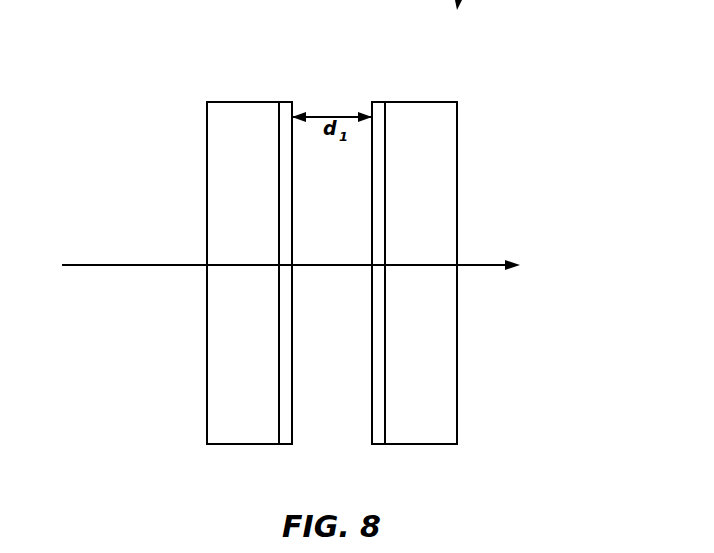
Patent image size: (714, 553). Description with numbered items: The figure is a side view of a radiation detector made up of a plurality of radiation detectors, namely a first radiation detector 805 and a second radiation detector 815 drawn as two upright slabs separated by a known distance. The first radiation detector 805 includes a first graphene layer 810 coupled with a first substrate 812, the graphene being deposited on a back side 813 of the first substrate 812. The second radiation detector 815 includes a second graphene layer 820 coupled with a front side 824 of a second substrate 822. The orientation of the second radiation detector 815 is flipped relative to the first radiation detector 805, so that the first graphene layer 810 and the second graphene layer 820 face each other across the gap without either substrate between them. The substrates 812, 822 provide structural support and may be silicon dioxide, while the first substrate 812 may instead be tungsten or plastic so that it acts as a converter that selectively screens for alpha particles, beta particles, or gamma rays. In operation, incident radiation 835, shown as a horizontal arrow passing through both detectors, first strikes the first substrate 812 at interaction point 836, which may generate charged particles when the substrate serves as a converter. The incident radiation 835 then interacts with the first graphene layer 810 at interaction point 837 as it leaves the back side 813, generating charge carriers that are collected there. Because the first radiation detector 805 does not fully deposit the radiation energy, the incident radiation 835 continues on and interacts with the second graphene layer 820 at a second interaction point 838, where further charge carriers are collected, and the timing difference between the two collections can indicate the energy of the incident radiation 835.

The first radiation detector 805 is at (292, 97).
The second radiation detector 815 is at (457, 97).
The first graphene layer 810 is at (284, 433).
The first substrate 812 is at (242, 433).
The back side 813 is at (278, 147).
The second graphene layer 820 is at (379, 433).
The second substrate 822 is at (427, 433).
The front side 824 is at (386, 152).
The incident radiation 835 is at (90, 263).
The interaction point 836 is at (207, 268).
The interaction point 837 is at (278, 268).
The second interaction point 838 is at (371, 268).